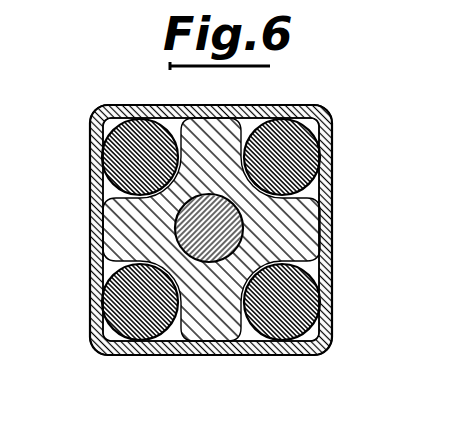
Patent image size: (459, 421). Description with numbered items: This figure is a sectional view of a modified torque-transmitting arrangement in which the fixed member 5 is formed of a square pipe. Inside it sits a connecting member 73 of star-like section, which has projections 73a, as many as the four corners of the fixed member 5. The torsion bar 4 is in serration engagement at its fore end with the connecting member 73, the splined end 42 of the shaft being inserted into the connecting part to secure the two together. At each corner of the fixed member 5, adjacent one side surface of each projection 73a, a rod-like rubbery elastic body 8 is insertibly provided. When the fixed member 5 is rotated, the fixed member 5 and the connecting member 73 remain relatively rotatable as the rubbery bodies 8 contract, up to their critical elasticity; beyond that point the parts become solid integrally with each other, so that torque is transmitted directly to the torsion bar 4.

The rubbery elastic body 8 is at (131, 121).
The connecting member 73 is at (110, 260).
The projection 73a is at (313, 235).
The torsion bar 4 is at (203, 253).
The splined end 42 is at (220, 257).
The fixed member 5 is at (152, 355).